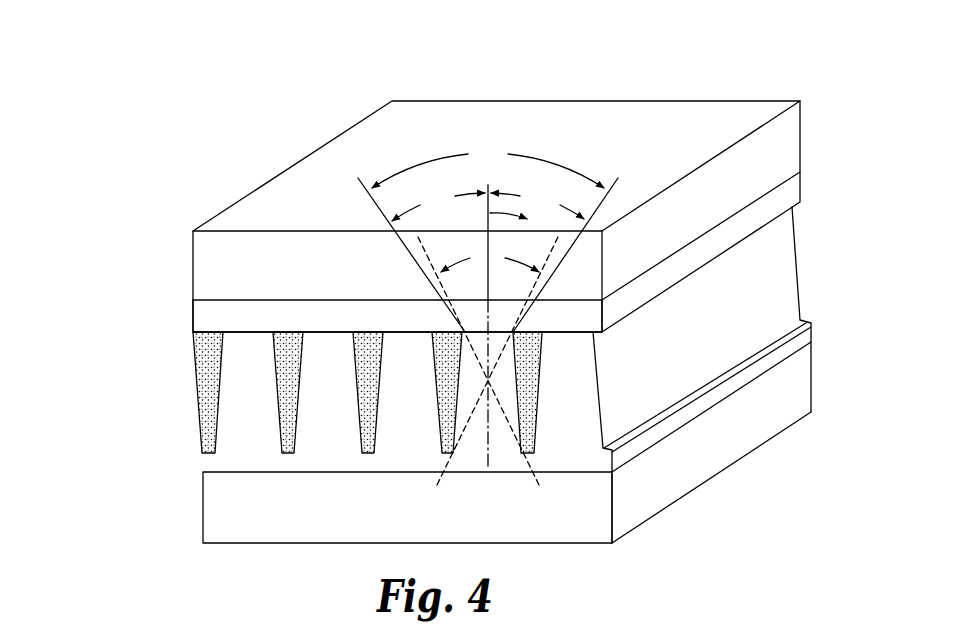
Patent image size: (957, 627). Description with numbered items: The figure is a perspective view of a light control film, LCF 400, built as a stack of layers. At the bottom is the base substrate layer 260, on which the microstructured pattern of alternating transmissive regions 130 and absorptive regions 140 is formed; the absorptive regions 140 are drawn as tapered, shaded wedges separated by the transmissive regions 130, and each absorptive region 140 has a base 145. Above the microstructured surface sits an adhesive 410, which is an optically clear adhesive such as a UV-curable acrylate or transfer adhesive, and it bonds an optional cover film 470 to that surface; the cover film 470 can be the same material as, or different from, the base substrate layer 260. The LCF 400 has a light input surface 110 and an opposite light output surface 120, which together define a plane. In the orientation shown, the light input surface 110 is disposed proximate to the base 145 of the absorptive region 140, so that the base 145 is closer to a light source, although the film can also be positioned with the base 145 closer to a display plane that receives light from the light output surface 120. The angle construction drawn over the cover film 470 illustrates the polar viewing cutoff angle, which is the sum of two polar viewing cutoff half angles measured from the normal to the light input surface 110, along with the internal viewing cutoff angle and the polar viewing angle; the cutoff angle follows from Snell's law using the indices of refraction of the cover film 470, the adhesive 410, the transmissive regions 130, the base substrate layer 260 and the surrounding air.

The LCF 400 is at (707, 49).
The light input surface 110 is at (391, 122).
The optional cover film 470 is at (370, 277).
The adhesive 410 is at (208, 313).
The transmissive regions 130 is at (238, 413).
The absorptive region 140 is at (285, 432).
The base 145 is at (290, 332).
The light output surface 120 is at (697, 488).
The base substrate layer 260 is at (404, 515).